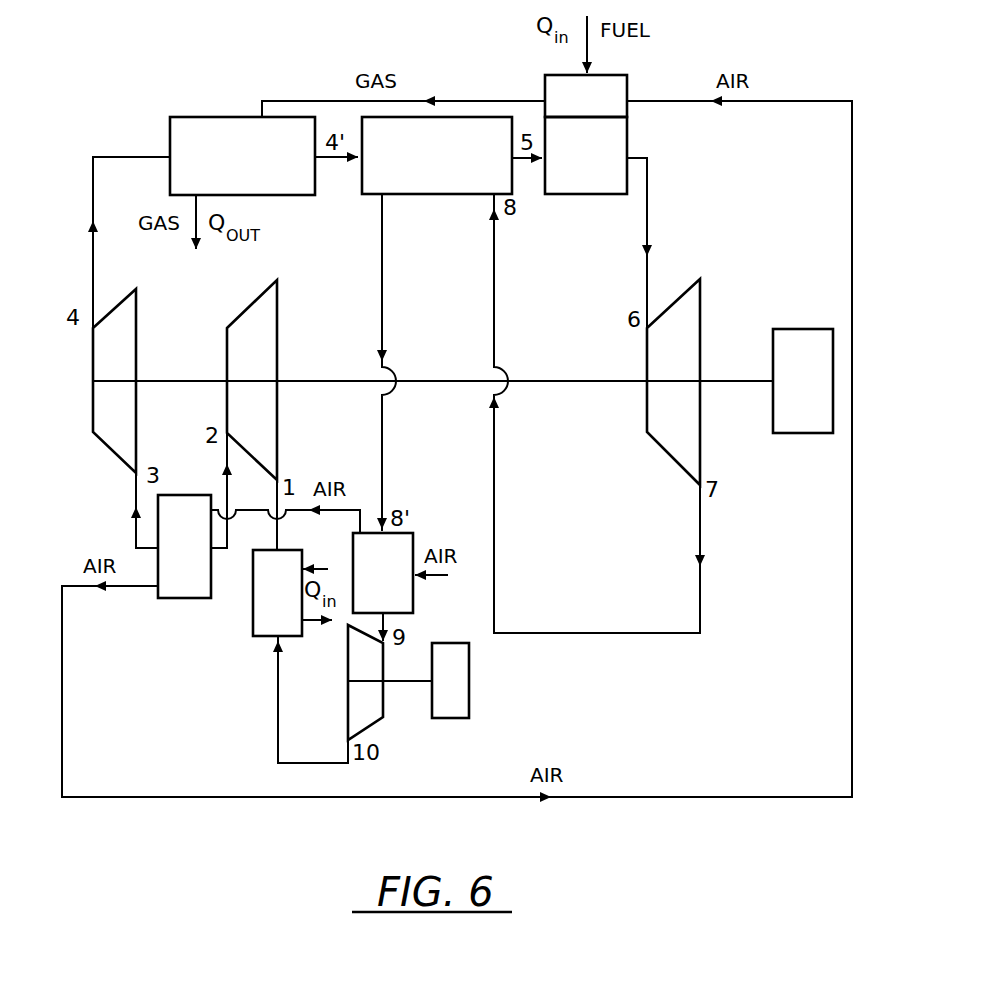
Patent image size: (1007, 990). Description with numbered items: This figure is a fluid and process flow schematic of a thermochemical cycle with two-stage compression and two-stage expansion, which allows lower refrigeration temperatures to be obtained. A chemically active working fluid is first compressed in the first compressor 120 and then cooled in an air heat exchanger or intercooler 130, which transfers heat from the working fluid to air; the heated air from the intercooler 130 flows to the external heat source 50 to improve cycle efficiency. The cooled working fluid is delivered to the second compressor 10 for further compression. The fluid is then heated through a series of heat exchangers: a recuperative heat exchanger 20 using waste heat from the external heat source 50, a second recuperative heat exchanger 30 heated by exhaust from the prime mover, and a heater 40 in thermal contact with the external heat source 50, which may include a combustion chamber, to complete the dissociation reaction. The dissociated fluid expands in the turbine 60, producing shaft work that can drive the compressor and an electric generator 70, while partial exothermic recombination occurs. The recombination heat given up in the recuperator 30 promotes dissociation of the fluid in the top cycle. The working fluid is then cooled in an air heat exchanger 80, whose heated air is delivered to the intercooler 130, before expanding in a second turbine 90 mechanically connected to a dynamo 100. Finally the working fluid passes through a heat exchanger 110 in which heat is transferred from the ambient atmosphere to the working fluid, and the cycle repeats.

The recuperative heat exchanger 20 is at (217, 117).
The second recuperative heat exchanger 30 is at (476, 118).
The heater 40 is at (628, 141).
The external heat source 50 is at (628, 82).
The turbine 60 is at (701, 308).
The electric generator 70 is at (793, 329).
The air heat exchanger 80 is at (405, 540).
The turbine 90 is at (385, 717).
The dynamo 100 is at (470, 708).
The heat exchanger 110 is at (262, 636).
The first compressor 120 is at (277, 355).
The intercooler 130 is at (178, 598).
The second compressor 10 is at (107, 448).